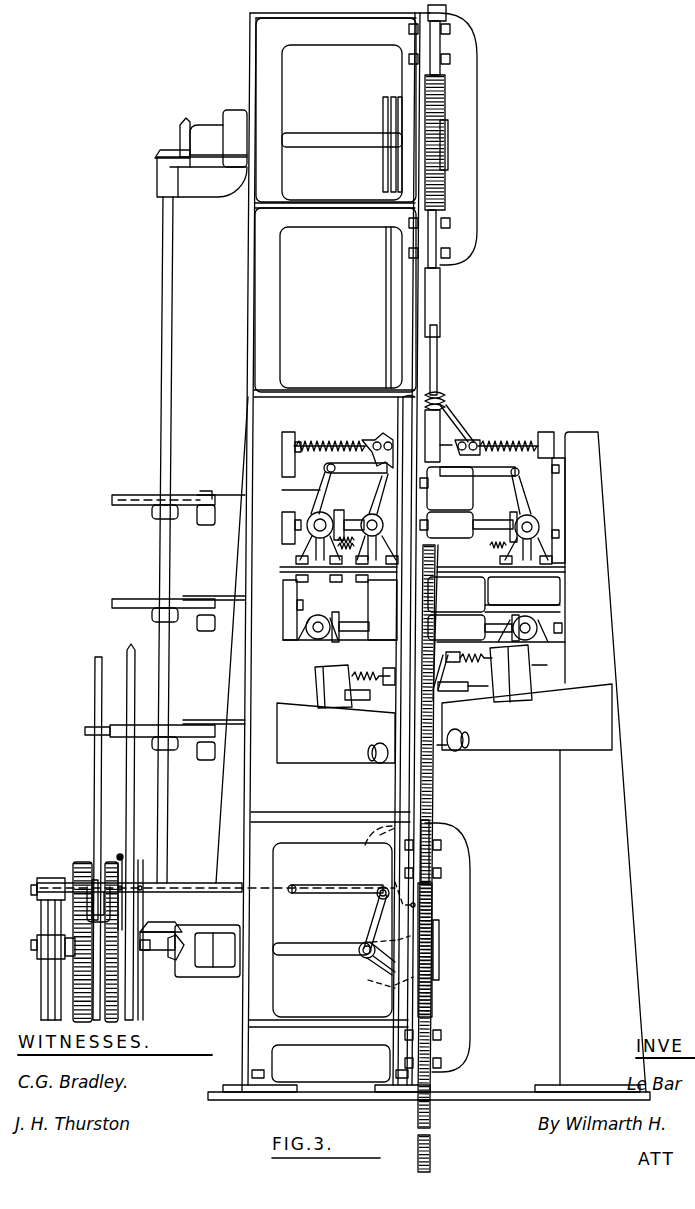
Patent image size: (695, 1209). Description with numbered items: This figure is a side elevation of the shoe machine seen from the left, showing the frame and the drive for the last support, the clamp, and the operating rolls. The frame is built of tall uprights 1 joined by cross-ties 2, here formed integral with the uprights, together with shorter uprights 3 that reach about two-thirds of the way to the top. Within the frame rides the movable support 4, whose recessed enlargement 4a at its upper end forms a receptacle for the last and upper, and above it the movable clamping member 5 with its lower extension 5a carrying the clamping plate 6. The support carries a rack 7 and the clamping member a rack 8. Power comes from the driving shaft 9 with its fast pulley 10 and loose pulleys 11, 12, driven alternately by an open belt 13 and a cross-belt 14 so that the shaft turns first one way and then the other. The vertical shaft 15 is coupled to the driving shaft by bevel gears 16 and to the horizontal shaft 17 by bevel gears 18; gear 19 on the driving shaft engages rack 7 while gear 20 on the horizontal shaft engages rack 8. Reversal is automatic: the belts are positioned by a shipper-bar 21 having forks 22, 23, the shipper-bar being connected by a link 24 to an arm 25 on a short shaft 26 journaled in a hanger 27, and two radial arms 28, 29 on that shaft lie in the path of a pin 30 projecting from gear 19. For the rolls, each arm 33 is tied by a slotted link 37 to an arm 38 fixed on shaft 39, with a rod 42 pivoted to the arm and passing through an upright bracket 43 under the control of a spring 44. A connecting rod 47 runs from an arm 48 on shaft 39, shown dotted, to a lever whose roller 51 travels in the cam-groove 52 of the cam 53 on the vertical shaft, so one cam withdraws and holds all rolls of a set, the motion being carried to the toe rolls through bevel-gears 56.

The uprights 1 is at (283, 365).
The cross-ties 2 is at (330, 212).
The uprights 3 is at (220, 833).
The movable support 4 is at (432, 455).
The enlargement 4a is at (444, 412).
The movable clamping member 5 is at (433, 297).
The extension 5a is at (436, 362).
The clamping plate 6 is at (446, 396).
The rack 7 is at (436, 808).
The rack 8 is at (447, 13).
The driving shaft 9 is at (290, 956).
The fast pulley 10 is at (112, 1000).
The loose pulley 11 is at (143, 982).
The loose pulley 12 is at (78, 870).
The open belt 13 is at (93, 775).
The cross-belt 14 is at (134, 795).
The vertical shaft 15 is at (163, 372).
The bevel gears 16 is at (165, 925).
The horizontal shaft 17 is at (345, 140).
The bevel-gears 18 is at (183, 125).
The gear 19 is at (433, 996).
The gear 20 is at (447, 118).
The shipper-bar 21 is at (170, 882).
The fork 22 is at (58, 903).
The fork 23 is at (119, 855).
The link 24 is at (330, 890).
The arm 25 is at (377, 918).
The short shaft 26 is at (362, 958).
The hanger 27 is at (370, 858).
The radial arm 28 is at (382, 971).
The radial arm 29 is at (407, 904).
The pin 30 is at (379, 862).
The arm 33 is at (480, 468).
The link 37 is at (370, 475).
The arm 38 is at (515, 503).
The shaft 39 is at (318, 640).
The rod 42 is at (512, 442).
The upright bracket 43 is at (325, 713).
The spring 44 is at (540, 445).
The connecting rod 47 is at (293, 490).
The arm 48 is at (326, 506).
The roller 51 is at (210, 512).
The cam-groove 52 is at (120, 493).
The cam 53 is at (115, 502).
The bevel-gears 56 is at (540, 520).